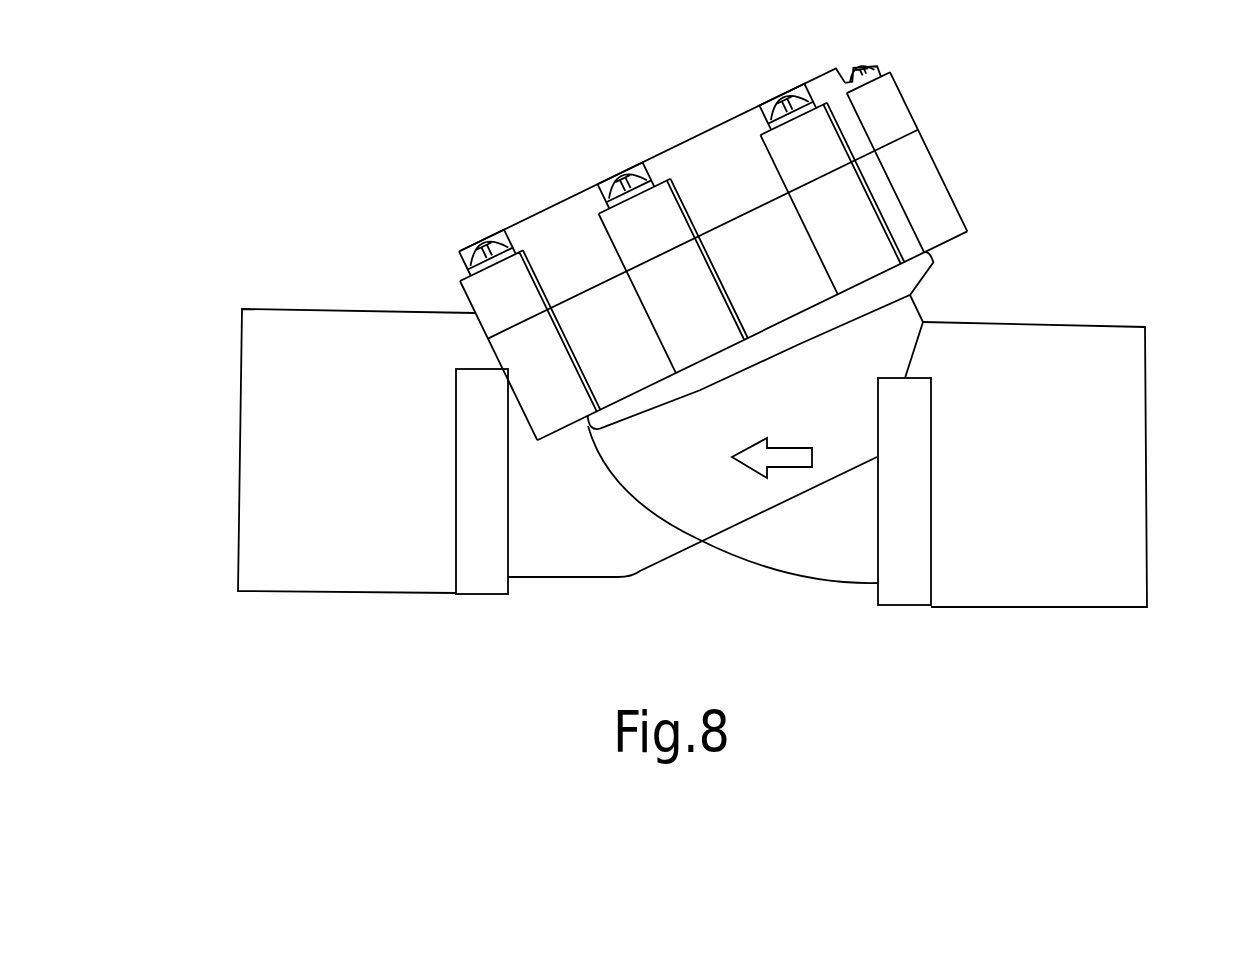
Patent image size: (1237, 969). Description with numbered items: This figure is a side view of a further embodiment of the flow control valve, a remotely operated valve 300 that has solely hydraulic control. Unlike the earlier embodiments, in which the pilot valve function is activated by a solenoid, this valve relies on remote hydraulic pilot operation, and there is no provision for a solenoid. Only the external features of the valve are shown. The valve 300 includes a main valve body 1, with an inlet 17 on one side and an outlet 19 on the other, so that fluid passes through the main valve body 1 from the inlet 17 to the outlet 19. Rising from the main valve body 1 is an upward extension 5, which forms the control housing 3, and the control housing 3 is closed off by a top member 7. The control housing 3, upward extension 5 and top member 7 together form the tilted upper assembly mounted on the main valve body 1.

The remotely operated valve 300 is at (347, 94).
The main valve body 1 is at (707, 552).
The control housing 3 is at (737, 258).
The upward extension 5 is at (943, 212).
The top member 7 is at (703, 136).
The inlet 17 is at (1150, 459).
The outlet 19 is at (241, 456).